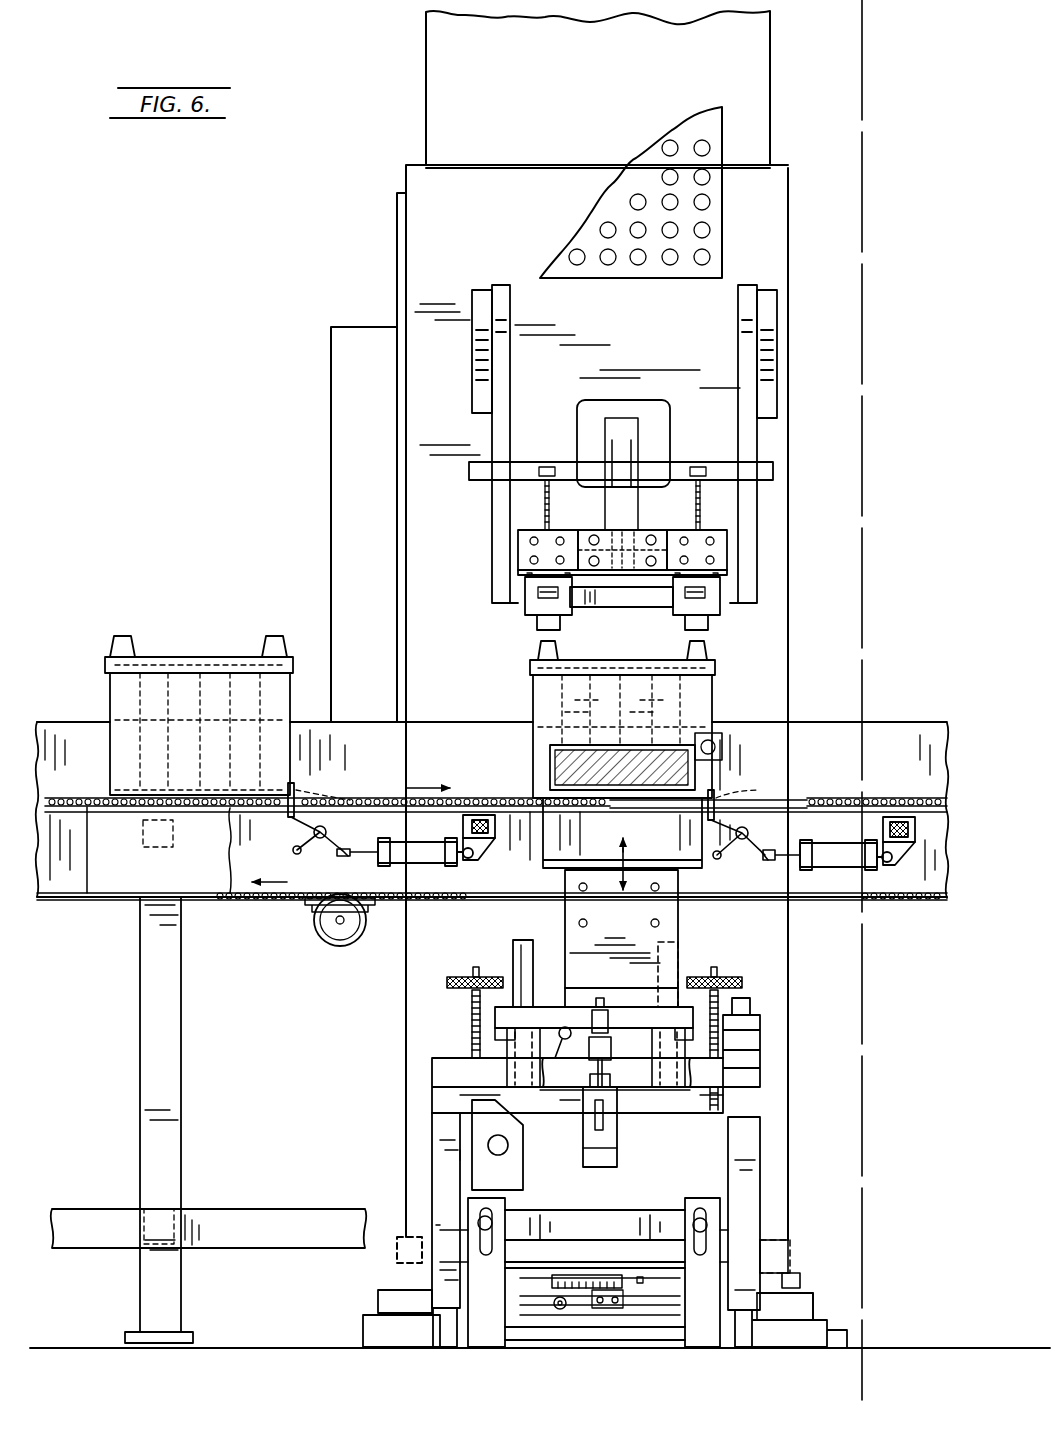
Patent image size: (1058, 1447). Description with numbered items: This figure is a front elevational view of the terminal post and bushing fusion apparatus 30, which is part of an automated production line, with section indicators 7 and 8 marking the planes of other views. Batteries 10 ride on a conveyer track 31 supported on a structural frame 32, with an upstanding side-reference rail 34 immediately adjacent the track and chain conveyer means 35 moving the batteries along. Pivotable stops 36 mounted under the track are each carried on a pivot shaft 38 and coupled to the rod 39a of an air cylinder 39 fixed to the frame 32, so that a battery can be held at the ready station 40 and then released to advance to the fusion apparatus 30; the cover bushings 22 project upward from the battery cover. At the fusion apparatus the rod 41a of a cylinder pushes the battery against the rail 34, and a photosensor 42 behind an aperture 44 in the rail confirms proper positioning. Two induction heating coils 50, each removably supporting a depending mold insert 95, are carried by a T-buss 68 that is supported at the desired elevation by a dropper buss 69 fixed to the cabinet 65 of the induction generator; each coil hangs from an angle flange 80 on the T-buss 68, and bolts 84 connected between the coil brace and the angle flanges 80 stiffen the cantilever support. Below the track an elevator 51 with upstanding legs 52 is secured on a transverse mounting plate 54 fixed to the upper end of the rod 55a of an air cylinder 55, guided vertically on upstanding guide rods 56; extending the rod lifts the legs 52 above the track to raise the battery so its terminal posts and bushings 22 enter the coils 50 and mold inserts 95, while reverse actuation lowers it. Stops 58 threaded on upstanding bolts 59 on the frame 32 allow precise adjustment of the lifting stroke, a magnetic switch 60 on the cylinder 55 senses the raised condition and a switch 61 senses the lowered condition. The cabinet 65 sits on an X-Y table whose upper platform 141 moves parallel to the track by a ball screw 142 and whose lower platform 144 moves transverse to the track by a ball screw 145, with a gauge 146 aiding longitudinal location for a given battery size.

The section line 7- 7 is at (820, 23).
The section line 8- 8 is at (830, 507).
The battery 10 is at (108, 690).
The cover bushing 22 is at (690, 652).
The terminal post and bushing fusion apparatus 30 is at (344, 244).
The conveyer track 31 is at (66, 806).
The structural frame 32 is at (118, 898).
The side-reference rail 34 is at (376, 720).
The chain conveyer means 35 is at (495, 786).
The pivotable stop 36 is at (300, 806).
The pivot shaft 38 is at (316, 833).
The air cylinder 39 is at (413, 864).
The rod 39a is at (383, 840).
The ready station 40 is at (163, 598).
The rod 41a is at (560, 747).
The photosensor 42 is at (722, 745).
The aperture 44 is at (724, 754).
The induction heating coil 50 is at (535, 600).
The elevator 51 is at (562, 920).
The upstanding leg 52 is at (543, 856).
The transverse mounting plate 54 is at (690, 1018).
The air cylinder 55 is at (617, 1158).
The rod 55a is at (605, 1072).
The guide rod 56 is at (513, 955).
The stop 58 is at (447, 982).
The upstanding bolt 59 is at (472, 1012).
The magnetic switch 60 is at (593, 1118).
The switch 61 is at (570, 1027).
The cabinet 65 is at (417, 323).
The T-buss 68 is at (595, 541).
The dropper buss 69 is at (635, 512).
The angle flange 80 is at (525, 577).
The bolt 84 is at (551, 492).
The mold insert 95 is at (537, 627).
The upper platform 141 is at (786, 1270).
The ball screw 142 is at (800, 1280).
The lower platform 144 is at (792, 1308).
The ball screw 145 is at (563, 1310).
The gauge 146 is at (583, 1280).